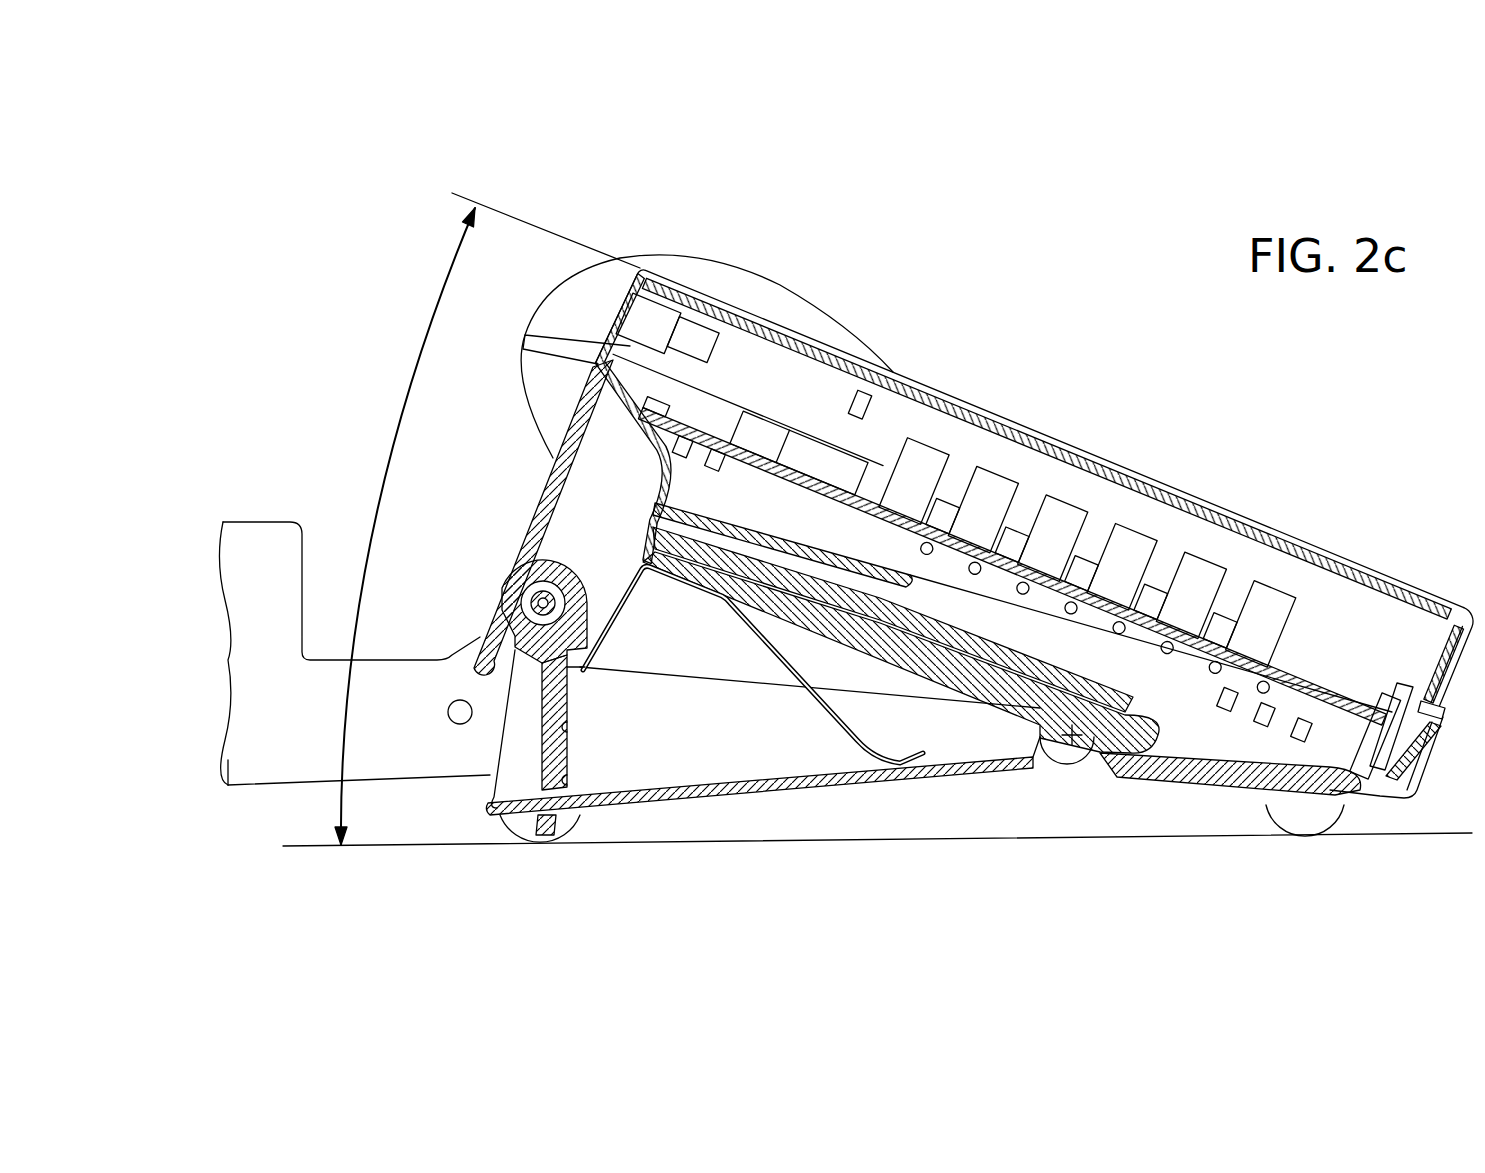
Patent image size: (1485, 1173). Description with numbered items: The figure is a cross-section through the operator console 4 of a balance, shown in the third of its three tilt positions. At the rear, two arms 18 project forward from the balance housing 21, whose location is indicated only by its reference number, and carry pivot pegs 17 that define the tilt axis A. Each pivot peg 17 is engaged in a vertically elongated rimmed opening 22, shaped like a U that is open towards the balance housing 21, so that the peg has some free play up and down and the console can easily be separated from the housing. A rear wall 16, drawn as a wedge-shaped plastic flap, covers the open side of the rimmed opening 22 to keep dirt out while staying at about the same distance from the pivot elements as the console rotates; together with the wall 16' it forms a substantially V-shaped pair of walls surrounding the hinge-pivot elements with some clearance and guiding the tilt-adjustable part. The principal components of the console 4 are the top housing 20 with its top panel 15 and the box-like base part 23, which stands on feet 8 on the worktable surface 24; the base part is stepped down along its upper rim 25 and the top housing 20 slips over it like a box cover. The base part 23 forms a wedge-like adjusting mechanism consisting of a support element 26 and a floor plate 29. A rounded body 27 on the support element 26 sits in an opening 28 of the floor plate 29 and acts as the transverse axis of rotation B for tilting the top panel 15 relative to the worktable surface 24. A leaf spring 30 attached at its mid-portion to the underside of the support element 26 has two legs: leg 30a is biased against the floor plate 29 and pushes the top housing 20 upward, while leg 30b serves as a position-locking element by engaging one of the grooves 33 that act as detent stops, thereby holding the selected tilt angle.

The operator console 4 is at (1068, 338).
The feet 8 is at (505, 845).
The top panel 15 is at (925, 395).
The rear wall 16 is at (541, 517).
The wall 16' is at (642, 418).
The pivot peg 17 is at (525, 612).
The arm 18 is at (262, 760).
The top housing 20 is at (826, 395).
The balance housing 21 is at (200, 672).
The rimmed opening 22 is at (525, 572).
The base part 23 is at (759, 776).
The worktable surface 24 is at (1415, 833).
The upper rim 25 is at (1427, 690).
The support element 26 is at (925, 657).
The rounded body 27 is at (1068, 763).
The opening 28 is at (1045, 775).
The floor plate 29 is at (872, 780).
The leaf spring 30 is at (745, 664).
The leg 30a is at (800, 688).
The leg 30b is at (605, 635).
The grooves 33 is at (577, 787).
The axis A is at (535, 600).
The transverse pivot axis B is at (1077, 742).